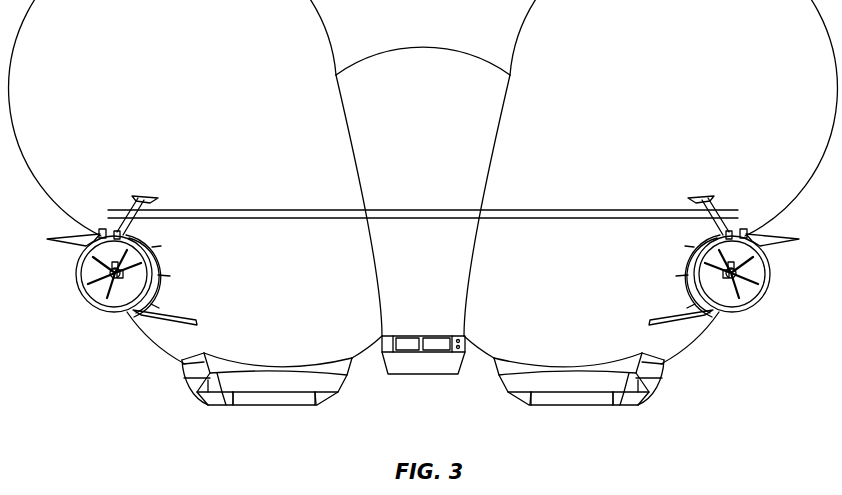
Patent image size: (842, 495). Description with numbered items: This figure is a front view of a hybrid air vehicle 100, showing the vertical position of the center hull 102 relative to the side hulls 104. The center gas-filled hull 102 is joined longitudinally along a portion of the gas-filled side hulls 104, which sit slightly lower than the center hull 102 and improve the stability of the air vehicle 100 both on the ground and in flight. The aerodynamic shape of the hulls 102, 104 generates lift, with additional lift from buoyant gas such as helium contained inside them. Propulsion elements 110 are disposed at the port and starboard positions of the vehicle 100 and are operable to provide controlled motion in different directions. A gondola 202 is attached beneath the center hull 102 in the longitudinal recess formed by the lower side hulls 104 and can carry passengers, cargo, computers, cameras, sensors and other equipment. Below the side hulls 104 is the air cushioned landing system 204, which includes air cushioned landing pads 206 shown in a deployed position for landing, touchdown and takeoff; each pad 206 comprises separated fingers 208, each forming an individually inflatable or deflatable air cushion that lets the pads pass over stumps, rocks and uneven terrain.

The hybrid air vehicle 100 is at (141, 77).
The center gas-filled hull 102 is at (423, 191).
The gas-filled side hulls 104 is at (423, 182).
The propulsion elements 110 is at (93, 209).
The gondola 202 is at (438, 380).
The air cushioned landing system (ACLS) 204 is at (609, 419).
The air cushioned landing pads 206 is at (360, 411).
The fingers 208 is at (293, 407).